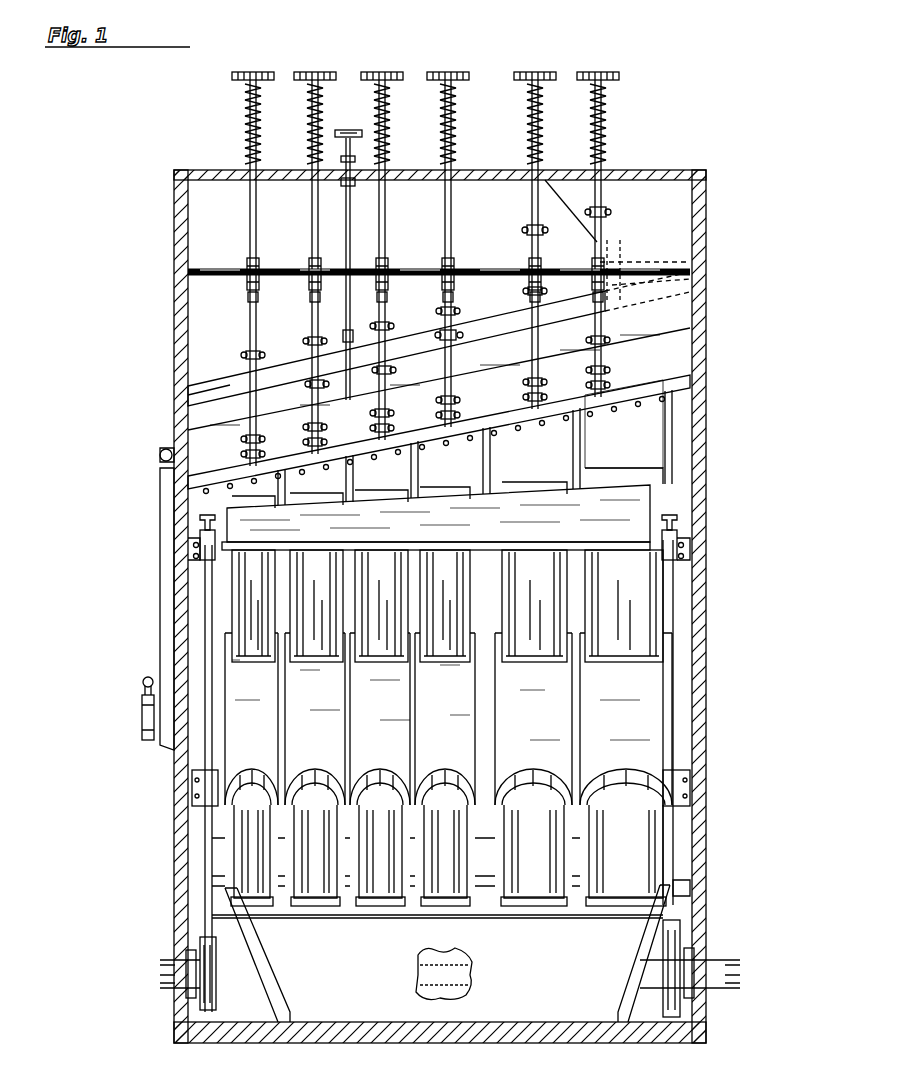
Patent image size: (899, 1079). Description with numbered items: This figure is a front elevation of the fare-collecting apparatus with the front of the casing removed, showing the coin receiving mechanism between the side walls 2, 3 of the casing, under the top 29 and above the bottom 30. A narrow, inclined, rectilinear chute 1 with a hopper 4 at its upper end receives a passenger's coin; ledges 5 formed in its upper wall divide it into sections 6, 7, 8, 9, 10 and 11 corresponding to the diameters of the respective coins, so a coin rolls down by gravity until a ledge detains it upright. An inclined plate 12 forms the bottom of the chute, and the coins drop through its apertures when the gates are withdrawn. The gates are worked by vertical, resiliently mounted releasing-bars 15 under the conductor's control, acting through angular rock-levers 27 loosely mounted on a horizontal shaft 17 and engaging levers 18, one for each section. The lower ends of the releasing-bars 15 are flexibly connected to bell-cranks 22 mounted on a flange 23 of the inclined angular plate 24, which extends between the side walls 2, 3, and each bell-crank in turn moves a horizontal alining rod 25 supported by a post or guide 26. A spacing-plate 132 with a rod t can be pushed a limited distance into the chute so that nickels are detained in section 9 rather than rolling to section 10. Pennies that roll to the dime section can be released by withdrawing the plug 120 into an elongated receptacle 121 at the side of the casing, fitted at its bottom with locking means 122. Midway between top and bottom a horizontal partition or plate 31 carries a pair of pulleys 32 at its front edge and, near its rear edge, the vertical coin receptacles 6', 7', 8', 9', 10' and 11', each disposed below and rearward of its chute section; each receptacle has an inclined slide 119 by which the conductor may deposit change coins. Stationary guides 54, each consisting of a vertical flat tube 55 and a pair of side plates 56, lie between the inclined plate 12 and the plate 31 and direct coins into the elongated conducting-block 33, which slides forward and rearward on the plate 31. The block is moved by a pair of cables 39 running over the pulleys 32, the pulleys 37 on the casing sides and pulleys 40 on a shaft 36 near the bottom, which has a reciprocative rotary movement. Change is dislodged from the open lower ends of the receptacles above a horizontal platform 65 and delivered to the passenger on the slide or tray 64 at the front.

The chute 1 is at (690, 344).
The side wall 2 is at (700, 425).
The side wall 3 is at (186, 352).
The hopper 4 is at (704, 215).
The ledges 5 is at (428, 342).
The section 6 is at (612, 318).
The section 7 is at (542, 358).
The section 8 is at (458, 377).
The section 9 is at (388, 391).
The section 10 is at (329, 405).
The section 11 is at (266, 418).
The inclined plate 12 is at (700, 372).
The releasing-bars 15 is at (312, 204).
The horizontal shaft 17 is at (412, 268).
The levers 18 is at (246, 342).
The bell-cranks 22 is at (258, 358).
The flange 23 is at (460, 332).
The inclined angular plate 24 is at (200, 396).
The alining rods 25 is at (262, 442).
The post or guide 26 is at (244, 454).
The rock-levers 27 is at (247, 310).
The top 29 is at (650, 168).
The bottom 30 is at (386, 1043).
The horizontal partition or plate 31 is at (445, 552).
The pulleys 32 is at (198, 528).
The conducting-block 33 is at (436, 533).
The shaft 36 is at (728, 962).
The pulleys 37 is at (192, 770).
The cables 39 is at (204, 640).
The pulleys 40 is at (198, 1000).
The stationary guides 54 is at (461, 463).
The vertical flat tube 55 is at (700, 398).
The vertical side plates 56 is at (700, 466).
The slide or tray 64 is at (437, 957).
The horizontal platform 65 is at (692, 895).
The slides 119 is at (448, 769).
The plug 120 is at (166, 448).
The elongated receptacle 121 is at (162, 605).
The locking means 122 is at (140, 694).
The spacing-plate 132 is at (352, 322).
The coin receptacle 6' is at (624, 606).
The coin receptacle 7' is at (534, 606).
The coin receptacle 8' is at (445, 606).
The coin receptacle 9' is at (381, 606).
The coin receptacle 10' is at (316, 606).
The coin receptacle 11' is at (253, 606).
The rod t is at (346, 245).
The handle rr is at (338, 132).